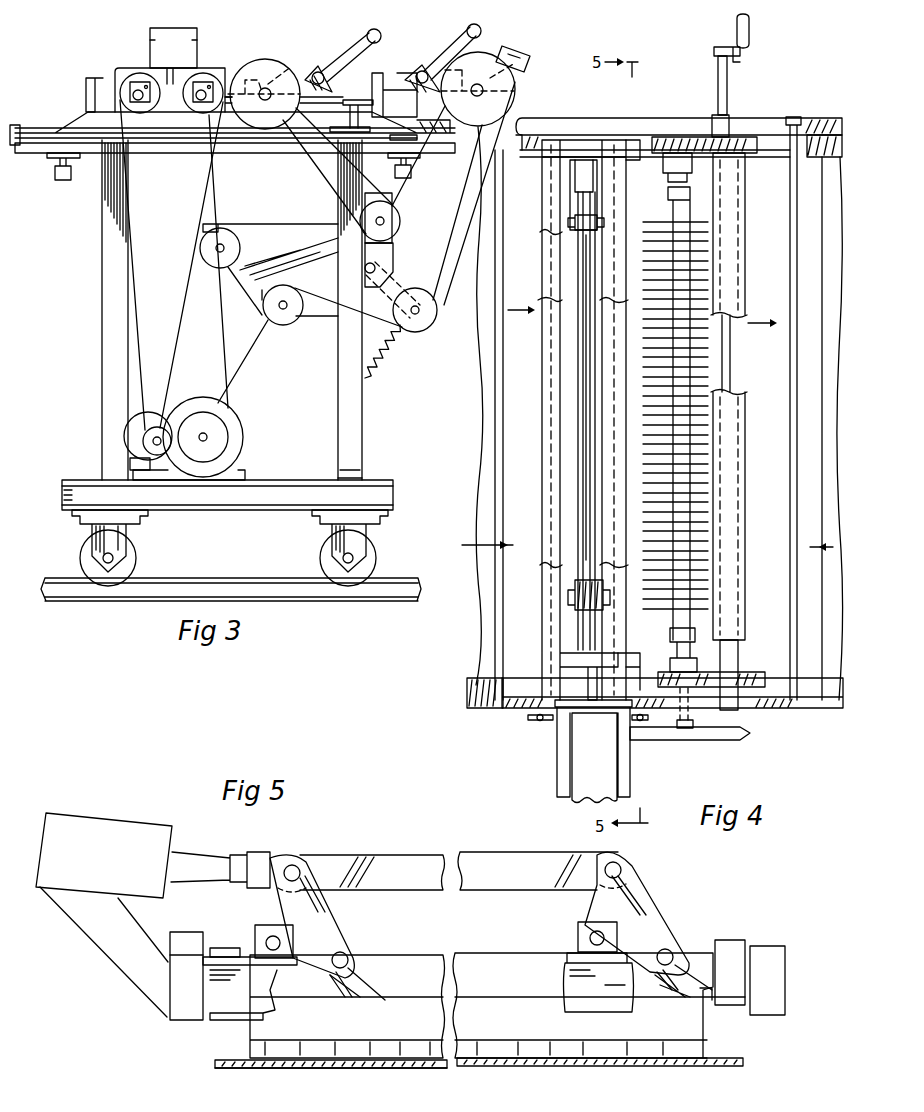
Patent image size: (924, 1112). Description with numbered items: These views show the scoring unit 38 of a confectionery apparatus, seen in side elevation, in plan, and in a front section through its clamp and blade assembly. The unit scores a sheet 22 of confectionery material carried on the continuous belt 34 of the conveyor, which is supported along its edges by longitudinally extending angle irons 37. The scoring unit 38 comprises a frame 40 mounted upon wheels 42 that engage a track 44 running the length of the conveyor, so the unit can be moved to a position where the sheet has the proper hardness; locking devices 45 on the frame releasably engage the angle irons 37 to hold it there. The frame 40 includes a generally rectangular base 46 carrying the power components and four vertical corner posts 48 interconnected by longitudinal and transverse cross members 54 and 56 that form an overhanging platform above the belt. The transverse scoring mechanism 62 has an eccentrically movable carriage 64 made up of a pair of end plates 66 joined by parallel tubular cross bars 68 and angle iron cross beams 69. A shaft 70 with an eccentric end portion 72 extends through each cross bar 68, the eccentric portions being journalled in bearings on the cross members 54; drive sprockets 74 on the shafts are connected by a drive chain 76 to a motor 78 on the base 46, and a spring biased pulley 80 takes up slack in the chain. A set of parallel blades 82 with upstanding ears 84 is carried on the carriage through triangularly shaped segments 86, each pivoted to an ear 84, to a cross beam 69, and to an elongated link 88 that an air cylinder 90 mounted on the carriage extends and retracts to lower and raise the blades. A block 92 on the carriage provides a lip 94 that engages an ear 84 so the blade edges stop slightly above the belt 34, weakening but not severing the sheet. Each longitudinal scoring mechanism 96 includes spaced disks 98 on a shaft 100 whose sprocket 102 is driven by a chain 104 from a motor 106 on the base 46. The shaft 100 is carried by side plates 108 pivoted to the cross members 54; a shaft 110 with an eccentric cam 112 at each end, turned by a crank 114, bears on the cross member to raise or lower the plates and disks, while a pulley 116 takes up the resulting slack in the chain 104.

In FIG. 3, the sheet of confectionery material 22 is at (28, 128).
In FIG. 4, the sheet of confectionery material 22 is at (533, 421).
In FIG. 5, the sheet of confectionery material 22 is at (232, 1062).
In FIG. 3, the continuous belt 34 is at (15, 128).
In FIG. 4, the continuous belt 34 is at (522, 134).
In FIG. 5, the continuous belt 34 is at (213, 1070).
In FIG. 3, the angle irons 37 is at (24, 153).
In FIG. 4, the angle irons 37 is at (475, 692).
In FIG. 3, the scoring unit 38 is at (251, 44).
In FIG. 3, the frame 40 is at (366, 447).
In FIG. 3, the wheels 42 is at (133, 553).
In FIG. 3, the track 44 is at (197, 586).
In FIG. 3, the locking devices 45 is at (62, 182).
In FIG. 3, the base 46 is at (268, 493).
In FIG. 3, the vertical corner posts 48 is at (104, 366).
In FIG. 3, the longitudinally extending cross members 54 is at (334, 103).
In FIG. 4, the longitudinally extending cross members 54 is at (742, 125).
In FIG. 4, the transversely extending cross members 56 is at (502, 628).
In FIG. 3, the transverse scoring mechanism 62 is at (179, 28).
In FIG. 4, the transverse scoring mechanism 62 is at (580, 160).
In FIG. 5, the transverse scoring mechanism 62 is at (381, 831).
In FIG. 3, the eccentrically movable carriage 64 is at (207, 74).
In FIG. 4, the eccentrically movable carriage 64 is at (590, 145).
In FIG. 4, the end plates 66 is at (632, 140).
In FIG. 5, the end plates 66 is at (178, 1002).
In FIG. 4, the tubular cross bars 68 is at (542, 286).
In FIG. 4, the angle iron cross beams 69 is at (546, 221).
In FIG. 5, the angle iron cross beams 69 is at (226, 948).
In FIG. 4, the shaft 70 is at (548, 348).
In FIG. 4, the eccentric end portion 72 is at (551, 140).
In FIG. 3, the drive sprockets 74 is at (196, 104).
In FIG. 4, the drive sprockets 74 is at (540, 722).
In FIG. 3, the drive chain 76 is at (136, 203).
In FIG. 3, the motor 78 is at (188, 405).
In FIG. 3, the spring biased pulley 80 is at (222, 232).
In FIG. 4, the blades 82 is at (575, 334).
In FIG. 5, the blades 82 is at (407, 1024).
In FIG. 5, the upstanding ears 84 is at (355, 963).
In FIG. 5, the triangularly shaped segments 86 is at (325, 907).
In FIG. 5, the elongated link 88 is at (424, 881).
In FIG. 3, the air cylinder 90 is at (186, 56).
In FIG. 4, the air cylinder 90 is at (575, 772).
In FIG. 5, the air cylinder 90 is at (125, 830).
In FIG. 5, the block 92 is at (727, 940).
In FIG. 5, the lip 94 is at (703, 1002).
In FIG. 3, the longitudinal scoring mechanisms 96 is at (396, 36).
In FIG. 4, the longitudinal scoring mechanisms 96 is at (738, 96).
In FIG. 4, the disks 98 is at (705, 218).
In FIG. 4, the shaft 100 is at (668, 216).
In FIG. 3, the sprocket 102 is at (268, 58).
In FIG. 4, the sprocket 102 is at (718, 740).
In FIG. 3, the chain 104 is at (211, 178).
In FIG. 3, the motor 106 is at (136, 433).
In FIG. 4, the side plates 108 is at (668, 136).
In FIG. 4, the shaft 110 is at (718, 82).
In FIG. 4, the eccentric cam 112 is at (714, 118).
In FIG. 4, the crank 114 is at (751, 20).
In FIG. 3, the pulley 116 is at (416, 290).